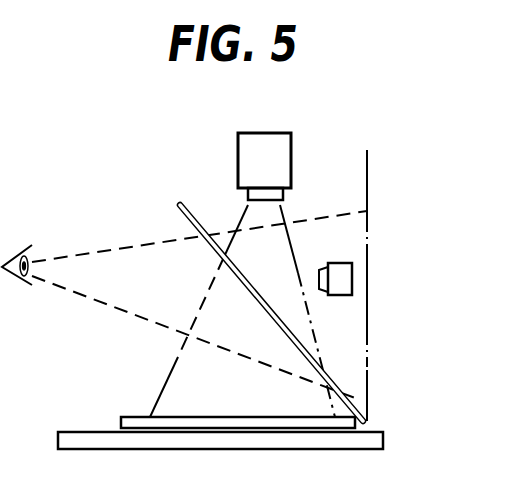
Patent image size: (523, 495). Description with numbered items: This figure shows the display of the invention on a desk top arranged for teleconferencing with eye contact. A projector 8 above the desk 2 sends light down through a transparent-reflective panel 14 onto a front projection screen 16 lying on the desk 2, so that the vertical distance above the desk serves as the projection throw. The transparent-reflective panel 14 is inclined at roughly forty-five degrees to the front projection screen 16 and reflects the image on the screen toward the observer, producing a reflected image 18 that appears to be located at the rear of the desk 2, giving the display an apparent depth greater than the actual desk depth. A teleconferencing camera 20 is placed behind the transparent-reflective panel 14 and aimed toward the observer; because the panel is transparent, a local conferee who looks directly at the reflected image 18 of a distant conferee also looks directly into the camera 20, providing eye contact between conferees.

The desk 2 is at (381, 431).
The projector 8 is at (291, 153).
The transparent-reflective panel 14 is at (170, 211).
The front projection screen 16 is at (132, 415).
The reflected image 18 is at (368, 192).
The teleconferencing camera 20 is at (340, 263).